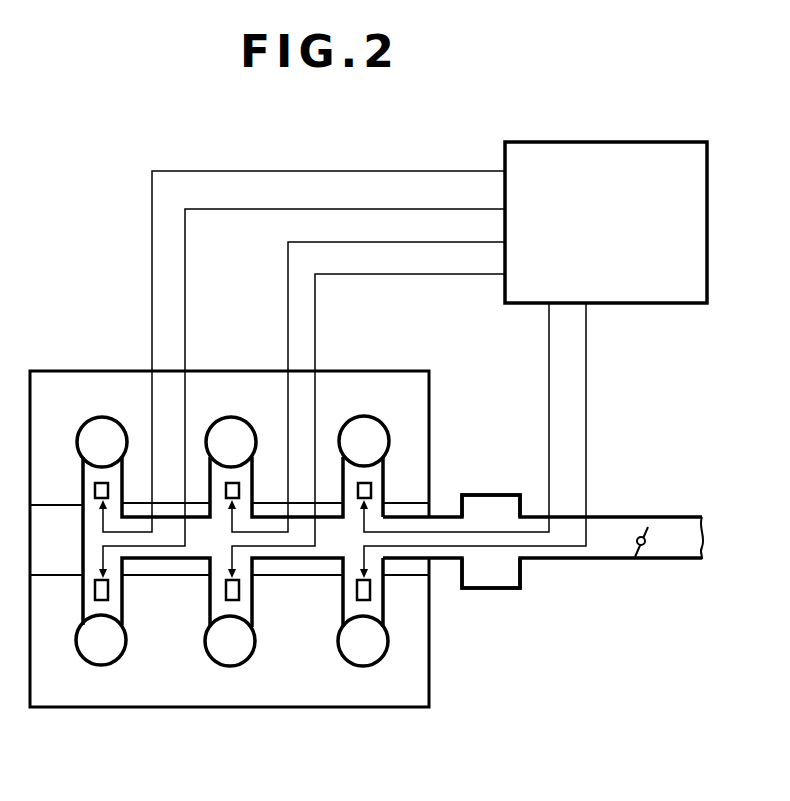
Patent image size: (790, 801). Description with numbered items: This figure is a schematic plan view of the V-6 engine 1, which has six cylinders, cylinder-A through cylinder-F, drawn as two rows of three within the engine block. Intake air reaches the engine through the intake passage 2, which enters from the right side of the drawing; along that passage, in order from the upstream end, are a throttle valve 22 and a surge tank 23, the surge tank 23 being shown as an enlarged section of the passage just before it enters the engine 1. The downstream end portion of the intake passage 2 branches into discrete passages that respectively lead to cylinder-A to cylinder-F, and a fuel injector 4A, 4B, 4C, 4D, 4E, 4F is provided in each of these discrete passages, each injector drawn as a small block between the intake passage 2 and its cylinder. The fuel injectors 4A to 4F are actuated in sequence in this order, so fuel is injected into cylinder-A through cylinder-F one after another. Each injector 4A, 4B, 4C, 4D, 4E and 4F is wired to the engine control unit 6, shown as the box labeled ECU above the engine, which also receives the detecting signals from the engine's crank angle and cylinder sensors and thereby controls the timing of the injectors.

The V-6 engine 1 is at (322, 709).
The intake passage 2 is at (619, 518).
The engine control unit 6 is at (643, 141).
The throttle valve 22 is at (640, 560).
The surge tank 23 is at (502, 574).
The fuel injector 4A is at (95, 489).
The fuel injector 4B is at (108, 594).
The fuel injector 4C is at (226, 489).
The fuel injector 4D is at (239, 594).
The fuel injector 4E is at (358, 489).
The fuel injector 4F is at (371, 594).